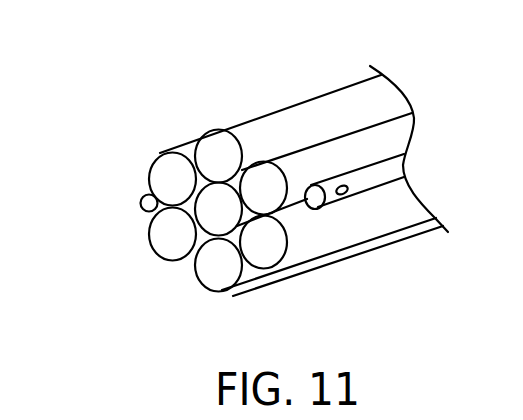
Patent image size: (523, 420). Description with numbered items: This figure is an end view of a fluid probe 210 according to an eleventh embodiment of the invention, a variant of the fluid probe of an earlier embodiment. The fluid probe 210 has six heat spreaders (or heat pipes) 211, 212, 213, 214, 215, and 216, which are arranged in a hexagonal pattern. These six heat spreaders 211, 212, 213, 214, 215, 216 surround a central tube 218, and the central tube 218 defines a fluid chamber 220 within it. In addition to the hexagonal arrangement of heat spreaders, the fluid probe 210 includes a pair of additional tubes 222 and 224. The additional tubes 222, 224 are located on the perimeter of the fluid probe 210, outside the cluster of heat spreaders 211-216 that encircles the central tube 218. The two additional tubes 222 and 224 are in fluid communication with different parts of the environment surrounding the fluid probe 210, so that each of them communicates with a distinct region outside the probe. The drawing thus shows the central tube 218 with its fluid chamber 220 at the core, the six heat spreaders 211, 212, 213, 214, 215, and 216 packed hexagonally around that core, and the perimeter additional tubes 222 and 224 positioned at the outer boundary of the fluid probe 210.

The fluid probe 210 is at (224, 92).
The heat spreader 211 is at (217, 155).
The heat spreader 212 is at (332, 158).
The heat spreader 213 is at (367, 213).
The heat spreader 214 is at (223, 271).
The heat spreader 215 is at (175, 235).
The heat spreader 216 is at (168, 181).
The central tube 218 is at (223, 228).
The fluid chamber 220 is at (223, 200).
The additional tube 222 is at (157, 207).
The additional tube 224 is at (373, 178).